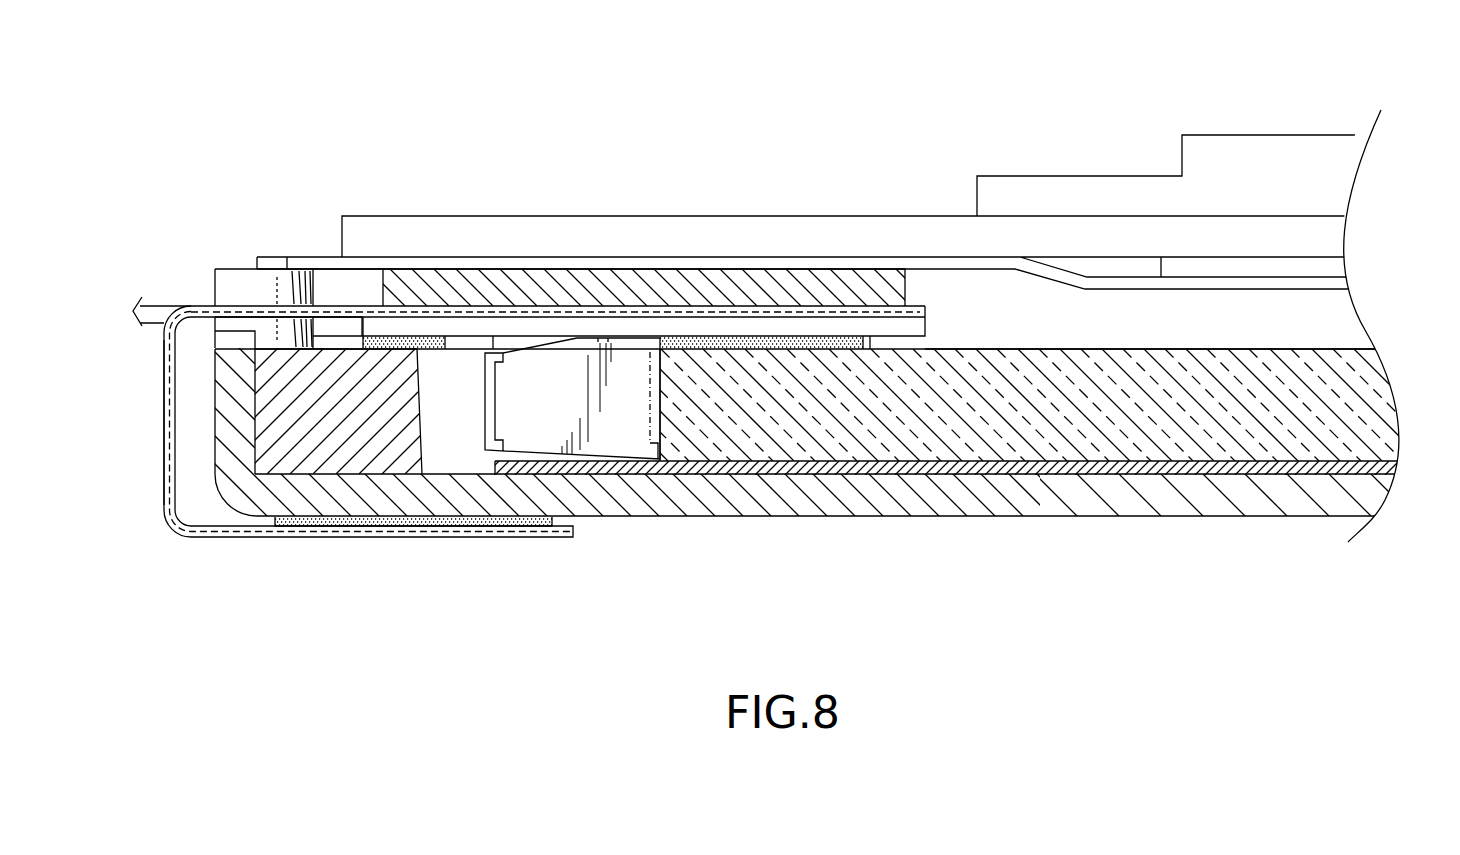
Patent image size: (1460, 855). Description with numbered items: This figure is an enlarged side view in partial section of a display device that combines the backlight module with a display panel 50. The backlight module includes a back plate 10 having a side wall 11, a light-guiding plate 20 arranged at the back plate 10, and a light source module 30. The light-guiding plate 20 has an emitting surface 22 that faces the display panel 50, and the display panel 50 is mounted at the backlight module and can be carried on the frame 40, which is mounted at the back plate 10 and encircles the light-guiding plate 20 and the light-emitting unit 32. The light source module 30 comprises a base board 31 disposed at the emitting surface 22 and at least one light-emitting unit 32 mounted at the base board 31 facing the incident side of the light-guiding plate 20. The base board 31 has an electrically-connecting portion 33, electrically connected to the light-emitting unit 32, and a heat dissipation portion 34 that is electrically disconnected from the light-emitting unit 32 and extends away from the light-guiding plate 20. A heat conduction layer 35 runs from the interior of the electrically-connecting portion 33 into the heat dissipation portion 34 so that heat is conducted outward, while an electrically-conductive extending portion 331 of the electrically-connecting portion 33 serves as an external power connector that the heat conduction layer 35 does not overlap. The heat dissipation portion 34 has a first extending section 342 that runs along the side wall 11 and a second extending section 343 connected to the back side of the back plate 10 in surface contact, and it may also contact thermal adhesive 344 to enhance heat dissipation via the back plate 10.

The back plate 10 is at (927, 505).
The side wall 11 is at (242, 450).
The light-guiding plate 20 is at (1386, 357).
The emitting surface 22 is at (1308, 349).
The light source module 30 is at (369, 297).
The base board 31 is at (230, 306).
The light-emitting unit 32 is at (618, 440).
The electrically-connecting portion 33 is at (563, 321).
The electrically-conductive extending portion 331 is at (155, 313).
The heat dissipation portion 34 is at (157, 377).
The first extending section 342 is at (163, 448).
The second extending section 343 is at (445, 537).
The thermal adhesive 344 is at (519, 517).
The heat conduction layer 35 is at (685, 318).
The frame 40 is at (327, 448).
The display panel 50 is at (1077, 190).